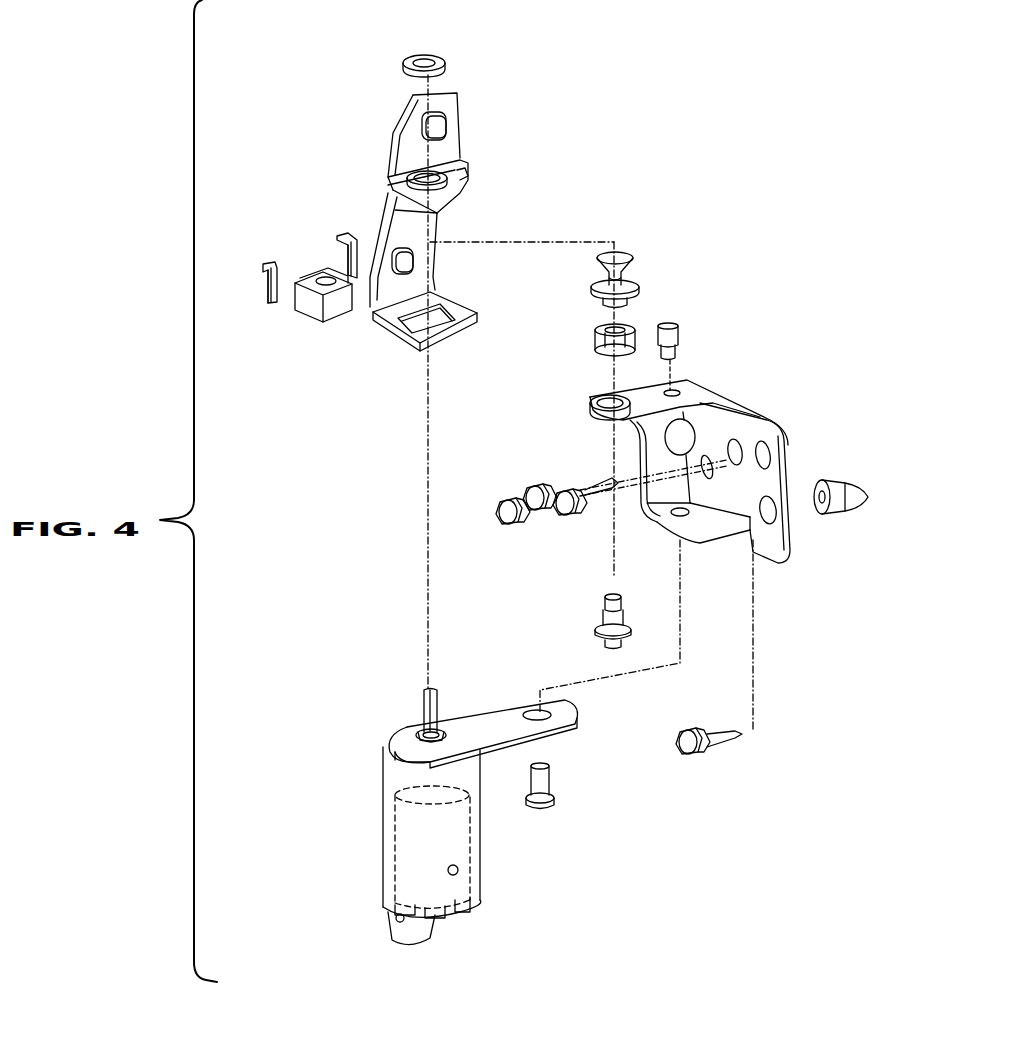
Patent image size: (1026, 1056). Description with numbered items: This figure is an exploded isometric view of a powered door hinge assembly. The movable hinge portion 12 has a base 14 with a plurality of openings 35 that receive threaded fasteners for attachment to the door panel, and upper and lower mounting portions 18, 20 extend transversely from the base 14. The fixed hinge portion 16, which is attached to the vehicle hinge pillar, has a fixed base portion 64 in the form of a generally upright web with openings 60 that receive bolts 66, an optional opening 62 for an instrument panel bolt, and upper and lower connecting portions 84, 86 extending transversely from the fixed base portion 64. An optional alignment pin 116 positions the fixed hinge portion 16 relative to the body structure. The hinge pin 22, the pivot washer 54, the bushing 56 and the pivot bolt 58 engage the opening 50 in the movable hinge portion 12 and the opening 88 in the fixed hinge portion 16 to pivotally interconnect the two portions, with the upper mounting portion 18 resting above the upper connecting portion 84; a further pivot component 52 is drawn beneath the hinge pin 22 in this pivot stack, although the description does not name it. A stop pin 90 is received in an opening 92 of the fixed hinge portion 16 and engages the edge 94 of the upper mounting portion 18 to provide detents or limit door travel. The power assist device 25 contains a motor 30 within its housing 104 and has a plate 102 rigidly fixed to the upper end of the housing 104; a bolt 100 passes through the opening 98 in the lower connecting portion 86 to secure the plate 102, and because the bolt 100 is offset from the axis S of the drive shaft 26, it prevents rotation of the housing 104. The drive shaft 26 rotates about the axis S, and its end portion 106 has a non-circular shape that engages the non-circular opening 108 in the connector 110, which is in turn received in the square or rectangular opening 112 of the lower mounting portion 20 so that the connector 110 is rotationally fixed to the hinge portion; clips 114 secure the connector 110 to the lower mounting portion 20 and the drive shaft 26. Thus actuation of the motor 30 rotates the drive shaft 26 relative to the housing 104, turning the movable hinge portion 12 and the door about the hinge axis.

The movable hinge portion 12 is at (431, 240).
The base 14 is at (397, 213).
The fixed hinge portion 16 is at (695, 457).
The upper mounting portion 18 is at (455, 208).
The lower mounting portion 20 is at (480, 323).
The hinge pin 22 is at (627, 278).
The power assist device 25 is at (427, 777).
The drive shaft 26 is at (434, 690).
The motor 30 is at (393, 827).
The openings 35 is at (440, 128).
The opening 50 is at (423, 174).
The collar 52 is at (612, 301).
The pivot washer 54 is at (410, 61).
The bushing 56 is at (627, 343).
The pivot bolt 58 is at (597, 630).
The openings 60 is at (767, 453).
The opening 62 is at (732, 443).
The fixed base portion 64 is at (770, 538).
The bolts 66 is at (548, 512).
The upper connecting portion 84 is at (607, 423).
The lower connecting portion 86 is at (707, 523).
The opening 88 is at (590, 400).
The stop pin 90 is at (673, 333).
The opening 92 is at (680, 388).
The edge 94 is at (462, 183).
The opening 98 is at (670, 518).
The bolt 100 is at (555, 792).
The plate 102 is at (513, 707).
The housing 104 is at (383, 863).
The end portion 106 is at (420, 736).
The non-circular opening 108 is at (287, 316).
The connector 110 is at (318, 318).
The opening 112 is at (420, 315).
The clips 114 is at (343, 240).
The alignment pin 116 is at (857, 490).
The axis S is at (430, 638).